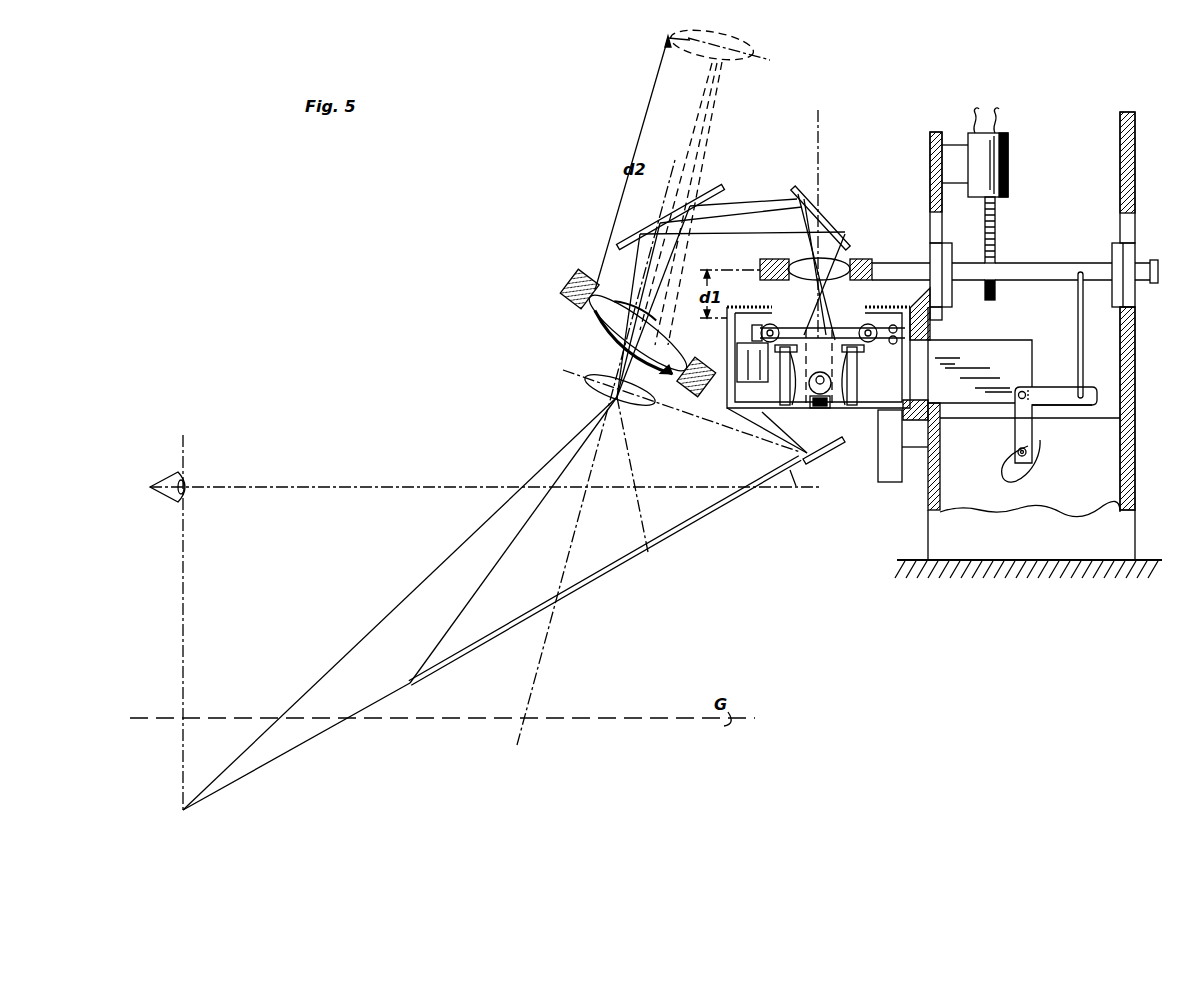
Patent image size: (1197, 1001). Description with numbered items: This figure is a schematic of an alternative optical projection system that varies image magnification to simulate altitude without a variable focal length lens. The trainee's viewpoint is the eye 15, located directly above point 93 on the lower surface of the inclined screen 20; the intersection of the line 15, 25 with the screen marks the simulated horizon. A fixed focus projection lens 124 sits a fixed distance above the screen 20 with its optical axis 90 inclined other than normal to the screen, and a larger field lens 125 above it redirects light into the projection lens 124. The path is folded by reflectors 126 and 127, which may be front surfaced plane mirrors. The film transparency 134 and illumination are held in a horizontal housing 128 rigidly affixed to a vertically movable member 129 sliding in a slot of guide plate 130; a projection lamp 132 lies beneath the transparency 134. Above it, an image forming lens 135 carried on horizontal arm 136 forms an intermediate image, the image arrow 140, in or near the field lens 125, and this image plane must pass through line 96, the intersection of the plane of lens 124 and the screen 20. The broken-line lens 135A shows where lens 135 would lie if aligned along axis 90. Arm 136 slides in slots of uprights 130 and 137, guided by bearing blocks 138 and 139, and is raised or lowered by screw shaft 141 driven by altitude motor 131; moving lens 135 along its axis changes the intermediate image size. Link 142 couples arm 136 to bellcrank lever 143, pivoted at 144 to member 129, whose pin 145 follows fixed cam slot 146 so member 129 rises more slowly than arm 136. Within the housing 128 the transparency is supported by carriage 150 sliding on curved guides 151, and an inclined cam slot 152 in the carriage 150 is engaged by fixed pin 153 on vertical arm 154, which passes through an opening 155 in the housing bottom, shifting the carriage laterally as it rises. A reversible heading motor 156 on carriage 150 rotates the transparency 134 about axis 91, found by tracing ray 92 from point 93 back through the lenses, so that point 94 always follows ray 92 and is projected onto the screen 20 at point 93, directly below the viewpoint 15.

The eye 15 is at (188, 493).
The inclined screen 20 is at (703, 518).
The line 15- 25 is at (755, 487).
The optical axis 90 is at (547, 649).
The axis 91 is at (838, 330).
The ray 92 is at (385, 615).
The point 93 is at (182, 808).
The point 94 is at (858, 313).
The line 96 is at (801, 488).
The fixed focus projection lens 124 is at (585, 386).
The field lens 125 is at (597, 322).
The reflector 126 is at (622, 232).
The reflector 127 is at (840, 231).
The housing 128 is at (762, 305).
The vertically movable member 129 is at (975, 350).
The guide plate 130 is at (930, 173).
The altitude motor 131 is at (1009, 143).
The projection lamp 132 is at (815, 408).
The film transparency 134 is at (793, 320).
The image forming lens 135 is at (807, 259).
The lens shown in broken lines 135A is at (740, 62).
The horizontal arm 136 is at (890, 266).
The upright guide member 137 is at (1137, 122).
The bearing block 138 is at (1113, 250).
The bearing block 139 is at (953, 243).
The image arrow 140 is at (681, 411).
The screw shaft 141 is at (997, 232).
The link 142 is at (821, 152).
The bellcrank lever 143 is at (1053, 388).
The pivot 144 is at (1016, 393).
The pin 145 is at (1033, 457).
The fixed cam slot 146 is at (1008, 481).
The carriage 150 is at (740, 331).
The curved guides 151 is at (789, 409).
The inclined cam slot 152 is at (915, 326).
The fixed pin 153 is at (910, 345).
The vertical arm 154 is at (895, 480).
The opening 155 is at (860, 415).
The reversible heading motor 156 is at (752, 382).